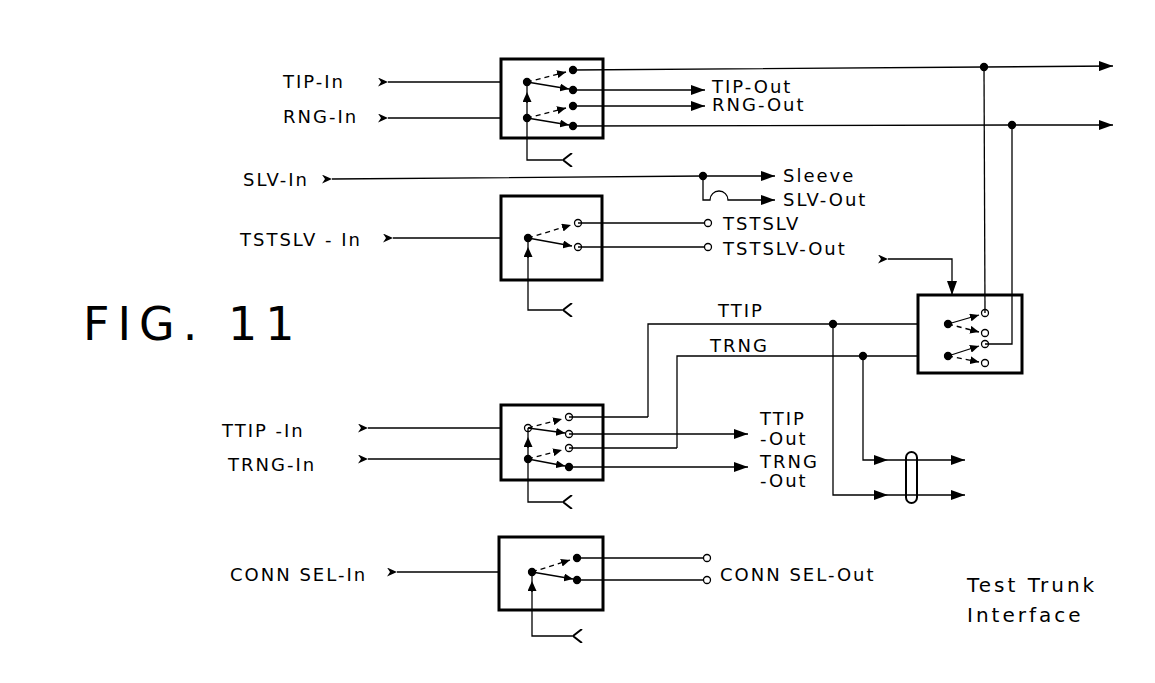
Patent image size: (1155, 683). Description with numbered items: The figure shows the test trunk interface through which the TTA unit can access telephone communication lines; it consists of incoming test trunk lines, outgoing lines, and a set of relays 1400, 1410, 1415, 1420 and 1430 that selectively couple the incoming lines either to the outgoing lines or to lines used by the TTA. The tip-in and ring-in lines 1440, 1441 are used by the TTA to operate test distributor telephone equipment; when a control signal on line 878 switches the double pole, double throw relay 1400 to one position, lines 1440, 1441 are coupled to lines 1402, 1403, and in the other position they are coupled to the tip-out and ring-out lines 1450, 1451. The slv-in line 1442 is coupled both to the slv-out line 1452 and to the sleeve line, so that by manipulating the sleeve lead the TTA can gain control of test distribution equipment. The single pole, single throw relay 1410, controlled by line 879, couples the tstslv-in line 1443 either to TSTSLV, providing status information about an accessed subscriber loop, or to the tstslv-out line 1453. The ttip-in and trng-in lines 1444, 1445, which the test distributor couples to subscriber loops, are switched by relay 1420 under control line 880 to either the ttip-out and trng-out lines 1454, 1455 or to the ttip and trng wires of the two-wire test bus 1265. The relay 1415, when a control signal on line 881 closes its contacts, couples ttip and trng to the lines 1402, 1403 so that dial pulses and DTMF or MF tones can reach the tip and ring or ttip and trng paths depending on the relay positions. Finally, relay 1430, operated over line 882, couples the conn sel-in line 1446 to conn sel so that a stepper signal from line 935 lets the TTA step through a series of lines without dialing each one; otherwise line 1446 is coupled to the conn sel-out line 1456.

The double pole, double throw relay 1400 is at (561, 59).
The tip-in line 1440 is at (436, 82).
The ring-in line 1441 is at (406, 119).
The tip-out line 1450 is at (633, 89).
The ring-out line 1451 is at (640, 106).
The line 1402 is at (1044, 67).
The line 1403 is at (1049, 125).
The control line 878 is at (527, 160).
The slv-in line 1442 is at (350, 179).
The slv-out line 1452 is at (703, 198).
The tstslv-in line 1443 is at (430, 238).
The single pole, single throw relay 1410 is at (603, 279).
The tstslv-out line 1453 is at (639, 248).
The control line 879 is at (546, 312).
The control line 881 is at (918, 258).
The relay 1415 is at (1022, 299).
The relay 1420 is at (562, 405).
The ttip-in line 1444 is at (430, 428).
The trng-in line 1445 is at (405, 461).
The ttip-out line 1454 is at (708, 434).
The trng-out line 1455 is at (697, 469).
The control line 880 is at (528, 502).
The relay 1430 is at (595, 537).
The conn sel-in line 1446 is at (432, 572).
The stepper signal line 935 is at (645, 558).
The conn sel-out line 1456 is at (638, 582).
The control line 882 is at (540, 636).
The two-wire test bus 1265 is at (911, 504).